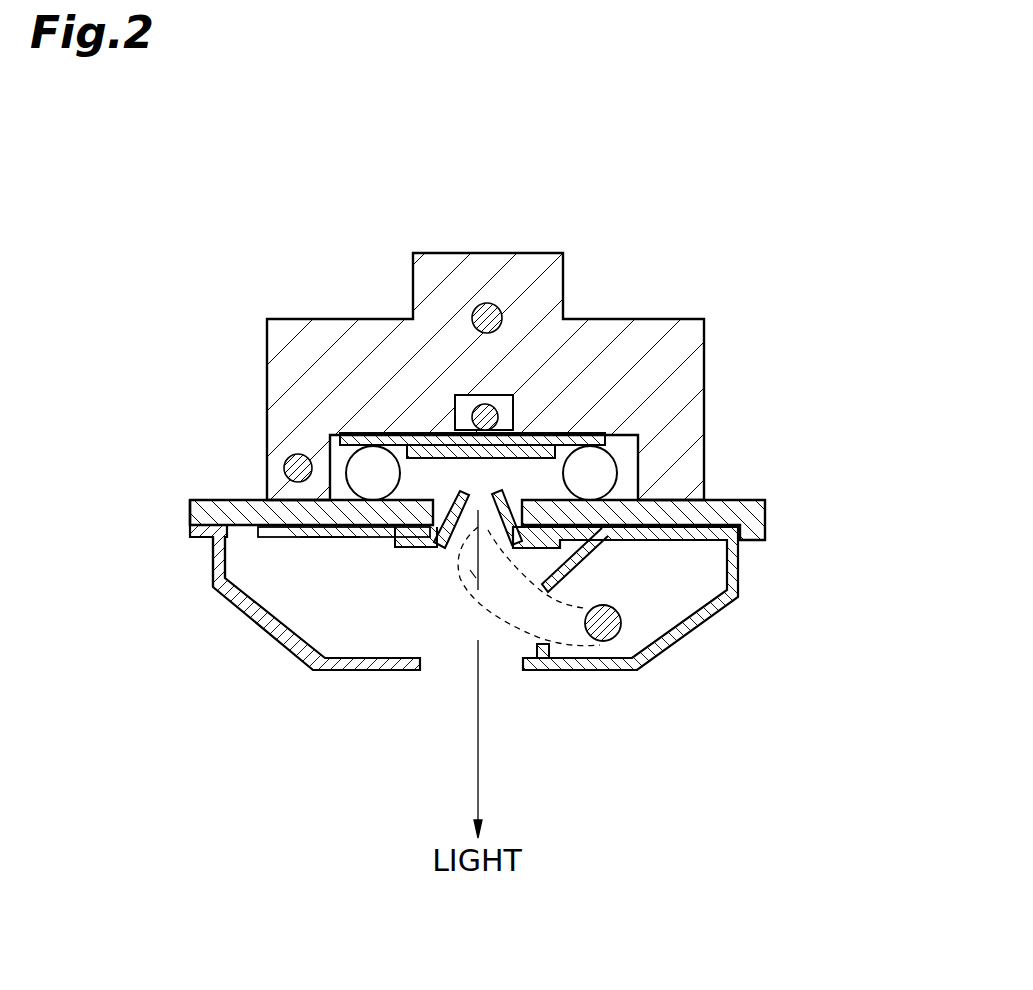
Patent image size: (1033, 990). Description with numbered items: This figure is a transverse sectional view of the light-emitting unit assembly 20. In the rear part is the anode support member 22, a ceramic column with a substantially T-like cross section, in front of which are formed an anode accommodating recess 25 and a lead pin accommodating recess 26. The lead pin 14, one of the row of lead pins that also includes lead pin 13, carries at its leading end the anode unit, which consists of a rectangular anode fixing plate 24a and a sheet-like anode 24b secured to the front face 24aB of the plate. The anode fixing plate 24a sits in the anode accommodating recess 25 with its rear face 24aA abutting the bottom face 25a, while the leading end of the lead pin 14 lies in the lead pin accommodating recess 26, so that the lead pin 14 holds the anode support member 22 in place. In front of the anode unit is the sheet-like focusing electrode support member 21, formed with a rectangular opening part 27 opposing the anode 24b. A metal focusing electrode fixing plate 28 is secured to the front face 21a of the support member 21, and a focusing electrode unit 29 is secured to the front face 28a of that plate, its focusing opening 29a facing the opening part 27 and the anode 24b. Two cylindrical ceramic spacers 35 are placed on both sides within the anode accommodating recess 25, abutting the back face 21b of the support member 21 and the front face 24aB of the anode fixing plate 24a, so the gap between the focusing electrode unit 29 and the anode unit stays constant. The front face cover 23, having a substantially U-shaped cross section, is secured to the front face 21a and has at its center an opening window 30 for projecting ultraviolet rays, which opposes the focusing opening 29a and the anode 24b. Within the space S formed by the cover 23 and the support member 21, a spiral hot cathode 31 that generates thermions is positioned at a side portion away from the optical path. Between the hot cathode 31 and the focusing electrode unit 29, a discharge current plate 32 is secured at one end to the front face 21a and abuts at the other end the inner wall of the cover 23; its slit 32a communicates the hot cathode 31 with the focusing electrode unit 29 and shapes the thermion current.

The lead pin 13 is at (478, 303).
The lead pin 14 is at (478, 405).
The light-emitting unit assembly 20 is at (691, 163).
The focusing electrode support member 21 is at (765, 520).
The front face of focusing electrode support member 21a is at (222, 545).
The back face of focusing electrode support member 21b is at (227, 500).
The anode support member 22 is at (676, 328).
The front face cover 23 is at (685, 638).
The anode fixing plate 24a is at (402, 450).
The anode 24b is at (432, 436).
The rear face of anode fixing plate 24aA is at (601, 432).
The front face of anode fixing plate 24aB is at (338, 436).
The anode accommodating recess 25 is at (608, 442).
The bottom face of anode accommodating recess 25a is at (561, 433).
The lead pin accommodating recess 26 is at (492, 432).
The opening part 27 is at (394, 538).
The focusing electrode fixing plate 28 is at (277, 538).
The front face of focusing electrode fixing plate 28a is at (327, 538).
The focusing electrode unit 29 is at (416, 548).
The focusing opening 29a is at (473, 573).
The opening window 30 is at (468, 668).
The hot cathode 31 is at (606, 643).
The discharge current plate 32 is at (597, 556).
The slit 32a is at (534, 646).
The cylindrical spacer 35 is at (362, 466).
The space S is at (685, 592).